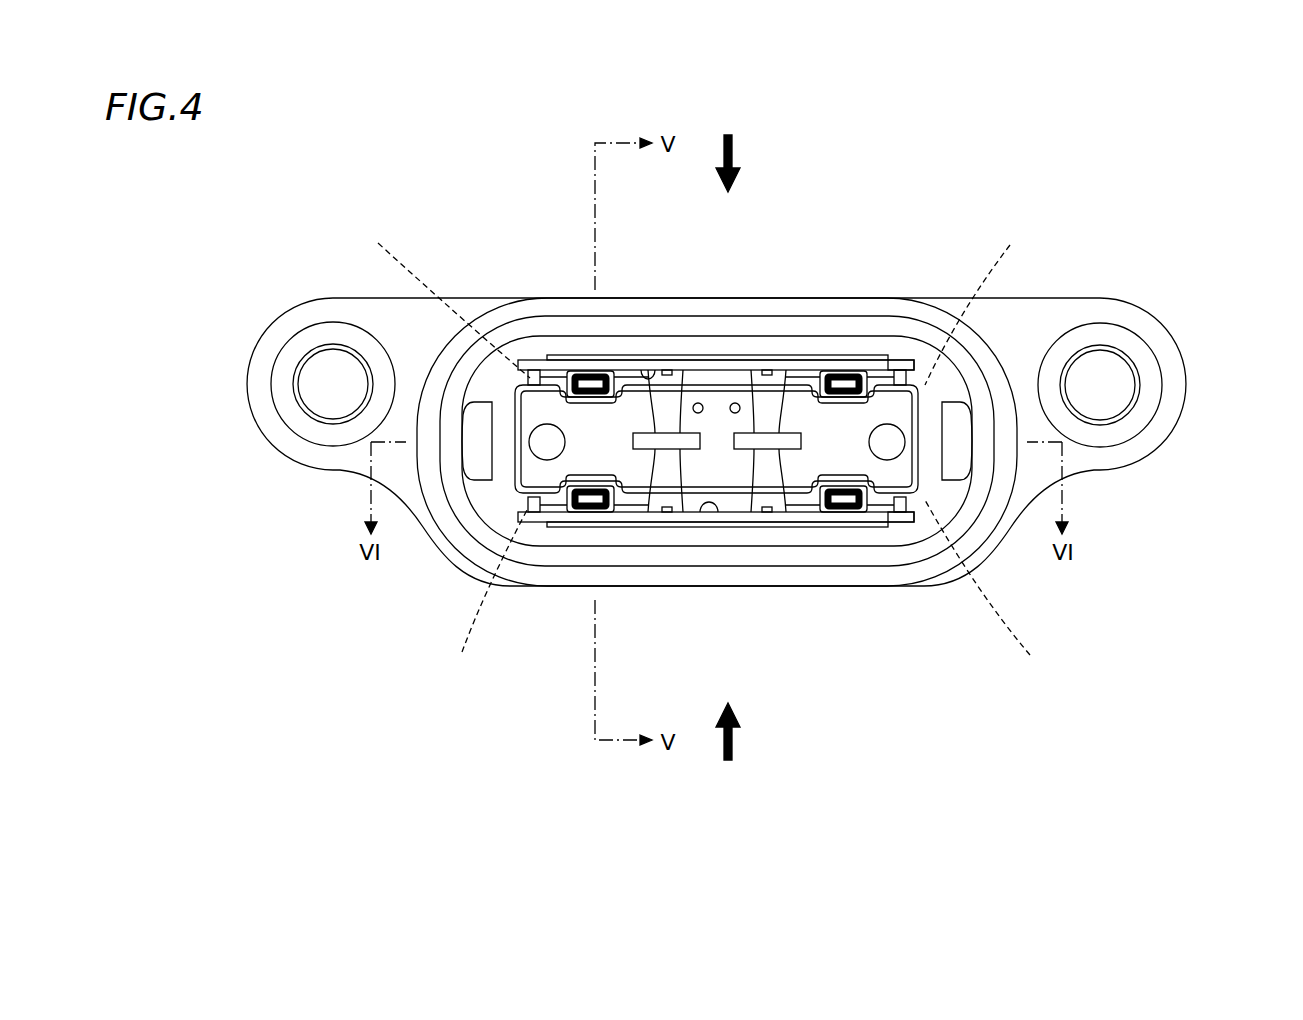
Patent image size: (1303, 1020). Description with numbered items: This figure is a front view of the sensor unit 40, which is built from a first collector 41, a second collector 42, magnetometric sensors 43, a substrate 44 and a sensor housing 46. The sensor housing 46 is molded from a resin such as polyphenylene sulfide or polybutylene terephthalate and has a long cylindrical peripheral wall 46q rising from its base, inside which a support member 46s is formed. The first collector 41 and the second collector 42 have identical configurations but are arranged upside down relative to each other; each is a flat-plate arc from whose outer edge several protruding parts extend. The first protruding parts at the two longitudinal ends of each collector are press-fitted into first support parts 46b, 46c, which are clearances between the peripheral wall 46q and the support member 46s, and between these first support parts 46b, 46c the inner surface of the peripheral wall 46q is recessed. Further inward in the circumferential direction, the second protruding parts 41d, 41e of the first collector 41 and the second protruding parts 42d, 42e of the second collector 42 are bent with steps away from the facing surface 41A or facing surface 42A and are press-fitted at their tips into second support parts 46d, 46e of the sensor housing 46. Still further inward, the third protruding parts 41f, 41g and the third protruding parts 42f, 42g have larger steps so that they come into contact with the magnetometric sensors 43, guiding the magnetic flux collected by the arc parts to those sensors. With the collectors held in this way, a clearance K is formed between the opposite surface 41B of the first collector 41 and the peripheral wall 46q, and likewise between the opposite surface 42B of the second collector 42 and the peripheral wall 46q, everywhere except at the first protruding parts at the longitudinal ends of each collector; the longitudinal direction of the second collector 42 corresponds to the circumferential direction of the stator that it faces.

The sensor unit 40 is at (1050, 192).
The first collector 41 is at (806, 386).
The facing surface 41A is at (658, 368).
The opposite surface 41B is at (628, 356).
The second protruding part 41d is at (585, 377).
The second protruding part 41e is at (878, 362).
The third protruding part 41f is at (673, 388).
The third protruding part 41g is at (777, 386).
The second collector 42 is at (808, 495).
The facing surface 42A is at (710, 522).
The opposite surface 42B is at (772, 527).
The second protruding part 42d is at (587, 506).
The second protruding part 42e is at (878, 522).
The third protruding part 42f is at (667, 500).
The third protruding part 42g is at (777, 500).
The magnetometric sensors 43 is at (692, 440).
The substrate 44 is at (873, 412).
The sensor housing 46 is at (475, 558).
The first support part 46b is at (439, 450).
The first support part 46c is at (995, 450).
The second support part 46d is at (520, 370).
The second support part 46e is at (903, 357).
The peripheral wall 46q is at (973, 405).
The support member 46s is at (497, 493).
The clearance K is at (848, 378).